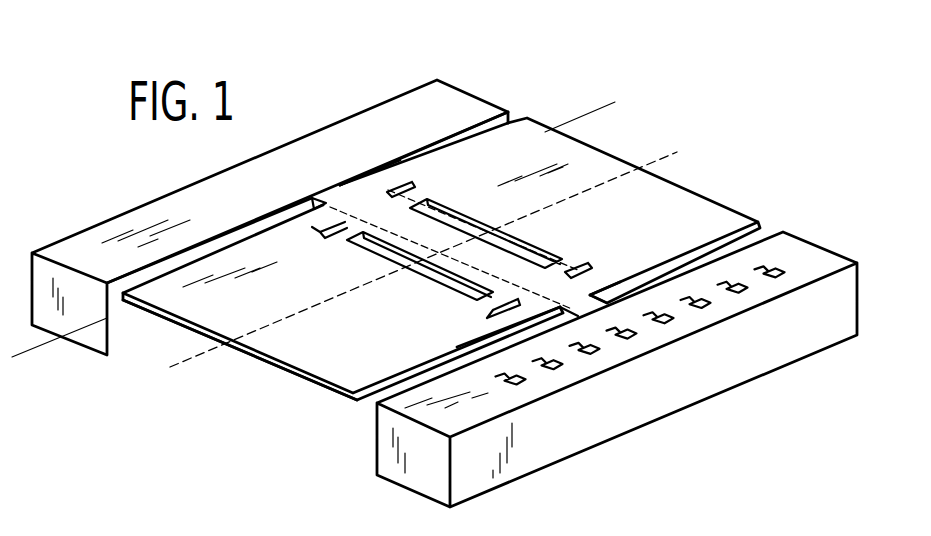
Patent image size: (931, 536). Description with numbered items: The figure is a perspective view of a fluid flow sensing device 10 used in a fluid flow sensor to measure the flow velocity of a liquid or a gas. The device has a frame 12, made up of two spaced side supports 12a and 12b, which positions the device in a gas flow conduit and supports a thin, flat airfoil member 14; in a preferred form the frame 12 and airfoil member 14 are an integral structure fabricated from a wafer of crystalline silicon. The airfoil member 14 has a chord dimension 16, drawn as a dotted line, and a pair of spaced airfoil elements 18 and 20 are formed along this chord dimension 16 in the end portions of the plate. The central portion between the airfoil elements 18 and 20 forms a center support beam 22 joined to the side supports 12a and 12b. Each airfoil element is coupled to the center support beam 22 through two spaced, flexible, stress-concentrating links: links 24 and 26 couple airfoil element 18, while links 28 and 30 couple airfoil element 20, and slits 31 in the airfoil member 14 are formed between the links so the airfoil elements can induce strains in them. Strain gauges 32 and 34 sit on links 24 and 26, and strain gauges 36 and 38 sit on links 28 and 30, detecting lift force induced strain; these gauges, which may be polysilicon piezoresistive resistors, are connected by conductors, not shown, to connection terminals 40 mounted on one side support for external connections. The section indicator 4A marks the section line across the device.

The fluid flow sensing device 10 is at (465, 55).
The frame 12 is at (672, 431).
The side support 12a is at (118, 217).
The side support 12b is at (804, 245).
The airfoil member 14 is at (243, 307).
The chord dimension 16 is at (619, 177).
The airfoil element 18 is at (340, 375).
The airfoil element 20 is at (545, 133).
The center support beam 22 is at (313, 195).
The link 24 is at (267, 217).
The link 26 is at (483, 337).
The link 28 is at (380, 186).
The link 30 is at (593, 282).
The slit 31 is at (490, 245).
The strain gauge 32 is at (312, 233).
The strain gauge 34 is at (487, 317).
The strain gauge 36 is at (417, 184).
The strain gauge 38 is at (588, 263).
The connection terminals 40 is at (773, 278).
The section line 4A is at (53, 357).